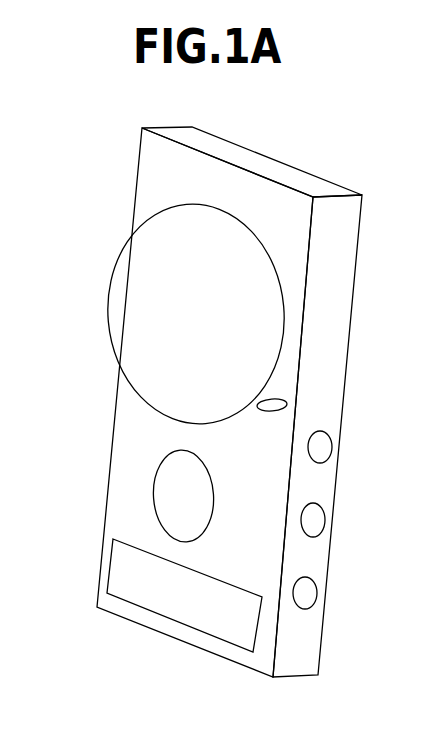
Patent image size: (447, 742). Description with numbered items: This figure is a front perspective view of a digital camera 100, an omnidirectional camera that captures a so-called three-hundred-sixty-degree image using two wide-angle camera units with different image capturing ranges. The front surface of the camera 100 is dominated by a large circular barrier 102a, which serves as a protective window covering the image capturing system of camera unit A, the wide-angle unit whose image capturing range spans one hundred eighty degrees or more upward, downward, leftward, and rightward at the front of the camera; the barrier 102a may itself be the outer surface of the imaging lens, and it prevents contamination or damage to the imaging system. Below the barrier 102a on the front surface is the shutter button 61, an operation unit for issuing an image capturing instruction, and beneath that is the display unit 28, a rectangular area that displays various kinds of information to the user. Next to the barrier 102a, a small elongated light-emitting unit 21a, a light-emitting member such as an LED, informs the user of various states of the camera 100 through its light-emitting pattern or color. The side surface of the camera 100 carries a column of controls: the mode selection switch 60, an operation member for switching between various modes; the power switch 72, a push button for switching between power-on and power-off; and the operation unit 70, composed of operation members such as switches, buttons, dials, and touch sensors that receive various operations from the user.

The digital camera 100 is at (258, 164).
The barrier 102a is at (128, 338).
The camera unit A is at (142, 284).
The light-emitting unit 21a is at (287, 403).
The mode selection switch 60 is at (328, 446).
The power switch 72 is at (318, 520).
The operation unit 70 is at (310, 595).
The shutter button 61 is at (153, 503).
The display unit 28 is at (173, 600).